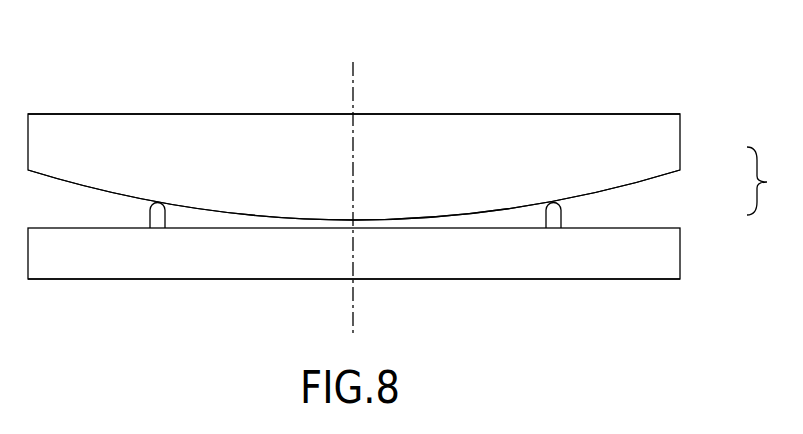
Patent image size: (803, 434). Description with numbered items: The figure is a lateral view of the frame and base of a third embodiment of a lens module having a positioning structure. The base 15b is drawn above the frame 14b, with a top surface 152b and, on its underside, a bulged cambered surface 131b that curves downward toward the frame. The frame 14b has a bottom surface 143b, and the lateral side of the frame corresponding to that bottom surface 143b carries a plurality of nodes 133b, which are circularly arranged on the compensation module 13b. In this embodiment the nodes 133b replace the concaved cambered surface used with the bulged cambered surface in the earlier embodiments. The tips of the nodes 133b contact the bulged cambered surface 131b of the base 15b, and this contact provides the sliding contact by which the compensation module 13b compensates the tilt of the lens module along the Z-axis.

The base 15b is at (663, 142).
The top surface of upper body 152b is at (632, 114).
The bulged cambered surface 131b is at (657, 176).
The nodes 133b is at (155, 212).
The compensation module 13b is at (775, 181).
The frame 14b is at (670, 254).
The bottom surface 143b is at (600, 279).